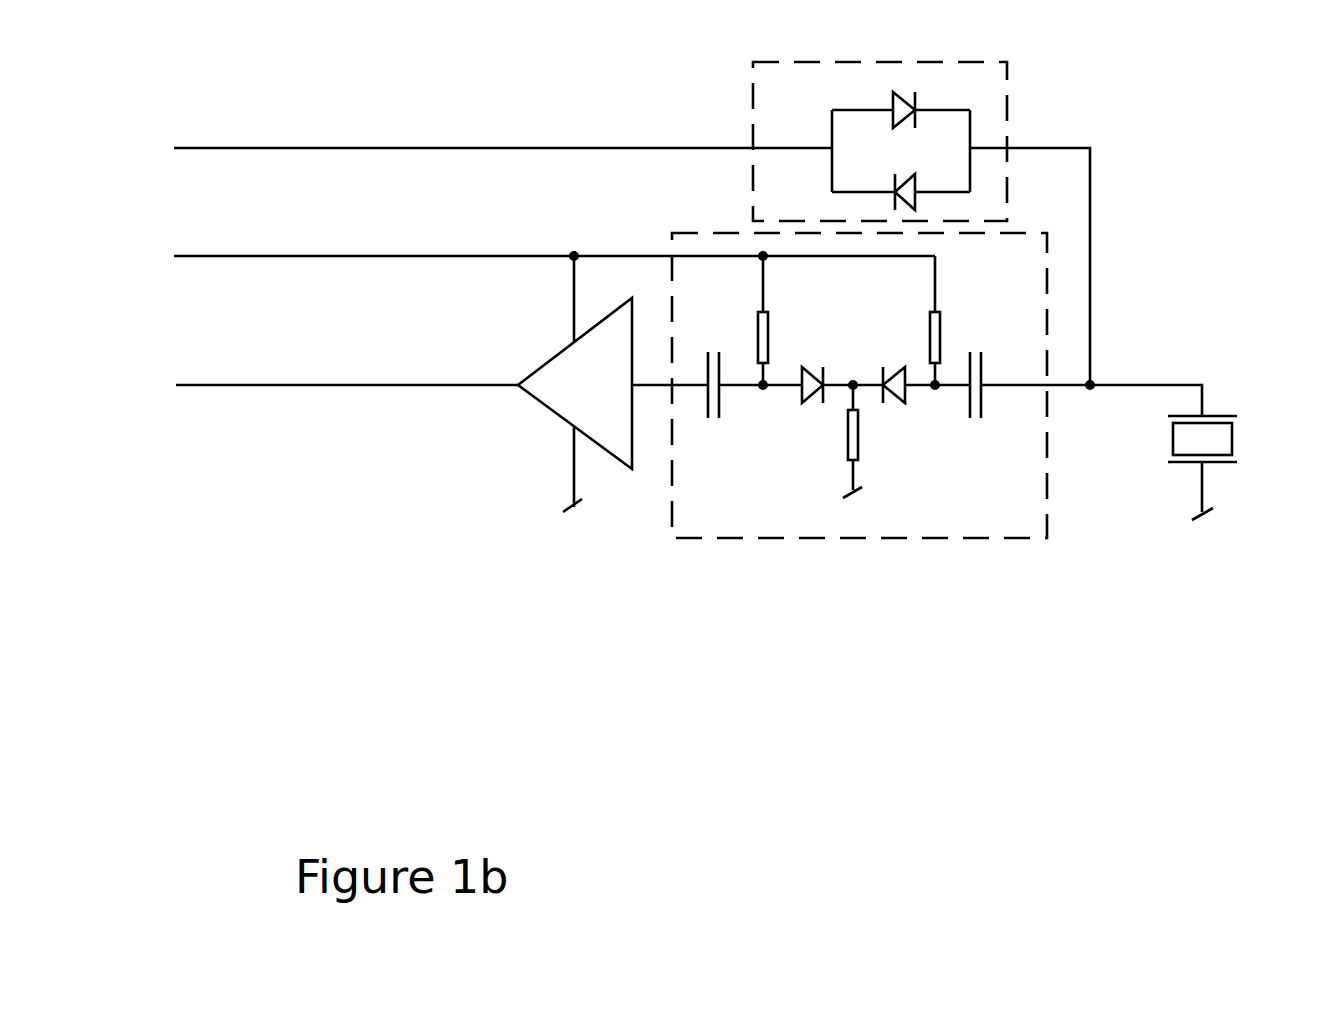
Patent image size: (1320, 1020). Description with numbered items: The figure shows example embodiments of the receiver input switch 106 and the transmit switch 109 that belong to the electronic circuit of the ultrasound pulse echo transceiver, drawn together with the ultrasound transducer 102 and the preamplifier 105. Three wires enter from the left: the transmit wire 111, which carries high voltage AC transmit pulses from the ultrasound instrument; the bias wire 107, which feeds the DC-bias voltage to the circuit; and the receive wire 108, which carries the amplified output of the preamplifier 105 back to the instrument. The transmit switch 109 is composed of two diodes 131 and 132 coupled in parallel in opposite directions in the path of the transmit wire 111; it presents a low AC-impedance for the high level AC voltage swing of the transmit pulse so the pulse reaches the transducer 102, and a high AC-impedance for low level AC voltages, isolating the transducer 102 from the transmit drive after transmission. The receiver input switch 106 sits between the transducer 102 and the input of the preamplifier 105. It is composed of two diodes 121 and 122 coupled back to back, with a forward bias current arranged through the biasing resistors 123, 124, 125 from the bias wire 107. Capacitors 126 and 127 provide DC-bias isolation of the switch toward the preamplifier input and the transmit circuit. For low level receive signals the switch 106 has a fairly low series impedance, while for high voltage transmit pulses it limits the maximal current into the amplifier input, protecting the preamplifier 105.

The ultrasound transducer 102 is at (1233, 468).
The preamplifier 105 is at (613, 384).
The receiver input switch 106 is at (937, 414).
The bias wire 107 is at (554, 235).
The receive wire 108 is at (344, 362).
The transmit switch 109 is at (880, 118).
The transmit wire 111 is at (634, 247).
The diode 121 is at (814, 369).
The diode 122 is at (895, 369).
The biasing resistor 123 is at (792, 335).
The biasing resistor 124 is at (967, 335).
The biasing resistor 125 is at (824, 441).
The capacitor 126 is at (717, 408).
The capacitor 127 is at (975, 408).
The diode 131 is at (933, 104).
The diode 132 is at (885, 175).